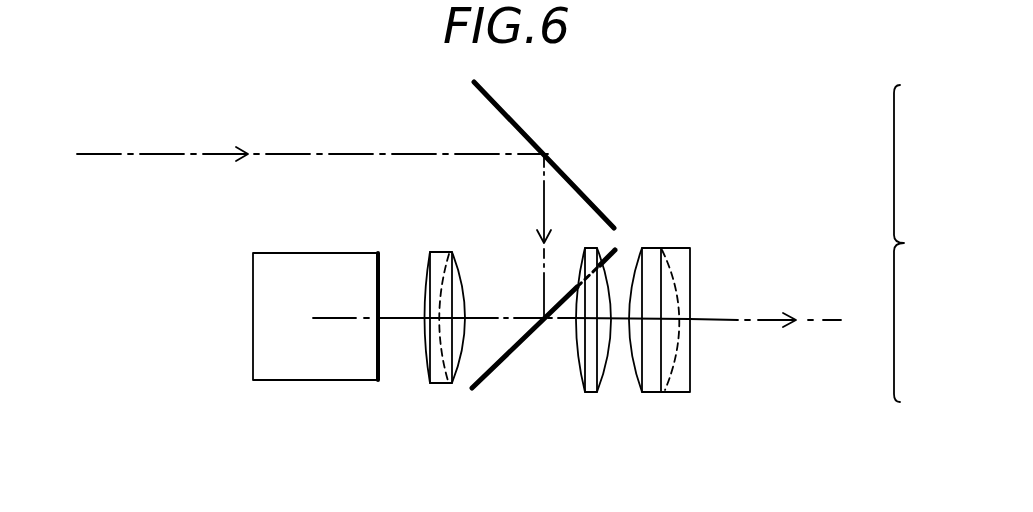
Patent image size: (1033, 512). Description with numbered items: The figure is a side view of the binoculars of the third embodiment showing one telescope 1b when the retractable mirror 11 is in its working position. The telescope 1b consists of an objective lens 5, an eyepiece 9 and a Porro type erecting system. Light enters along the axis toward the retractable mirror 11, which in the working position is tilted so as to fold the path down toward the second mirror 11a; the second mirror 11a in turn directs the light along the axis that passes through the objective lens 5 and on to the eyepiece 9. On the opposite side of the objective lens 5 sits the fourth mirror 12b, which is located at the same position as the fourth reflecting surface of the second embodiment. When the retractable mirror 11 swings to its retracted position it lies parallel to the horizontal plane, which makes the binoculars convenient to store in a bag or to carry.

The telescope 1b is at (917, 243).
The objective lens 5 is at (434, 390).
The eyepiece 9 is at (703, 373).
The retractable mirror 11 is at (503, 113).
The second mirror 11a is at (494, 389).
The fourth mirror 12b is at (315, 380).